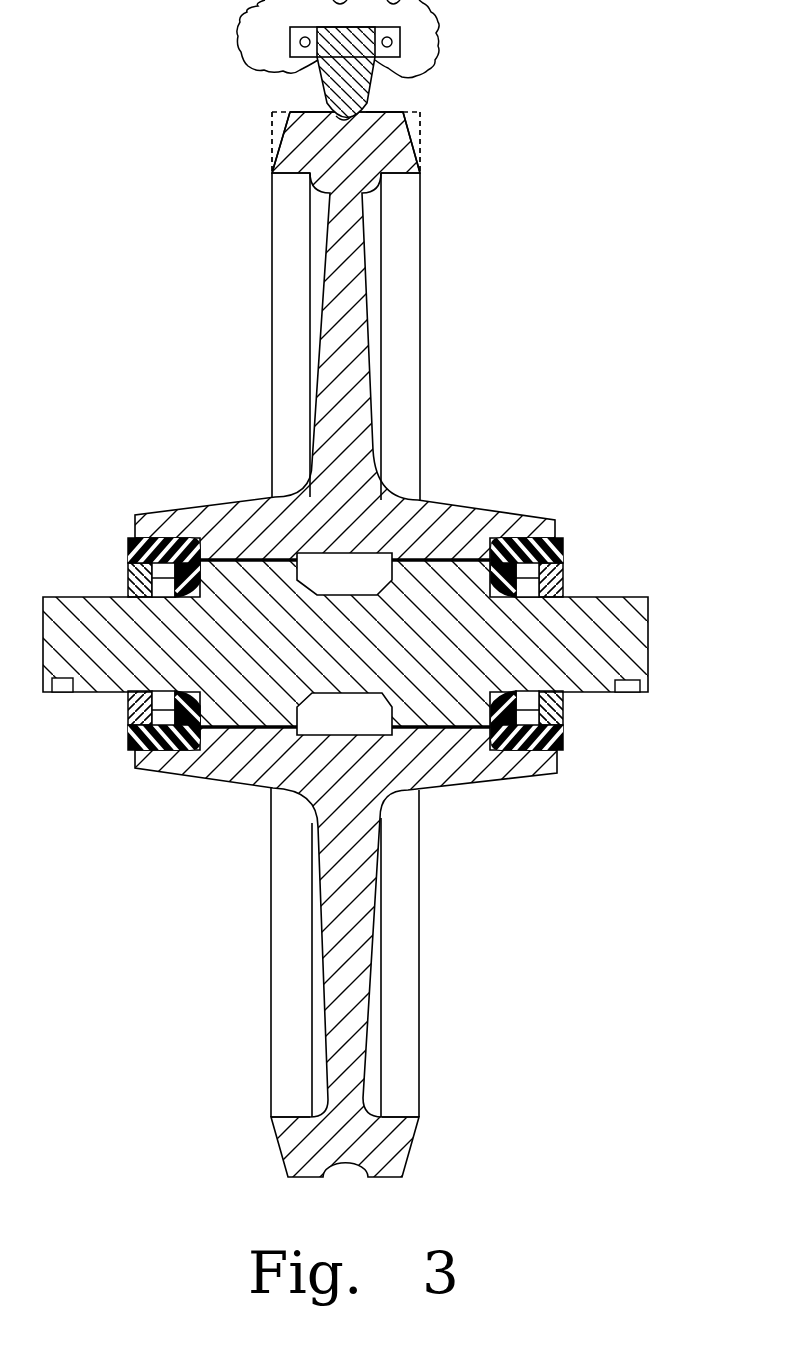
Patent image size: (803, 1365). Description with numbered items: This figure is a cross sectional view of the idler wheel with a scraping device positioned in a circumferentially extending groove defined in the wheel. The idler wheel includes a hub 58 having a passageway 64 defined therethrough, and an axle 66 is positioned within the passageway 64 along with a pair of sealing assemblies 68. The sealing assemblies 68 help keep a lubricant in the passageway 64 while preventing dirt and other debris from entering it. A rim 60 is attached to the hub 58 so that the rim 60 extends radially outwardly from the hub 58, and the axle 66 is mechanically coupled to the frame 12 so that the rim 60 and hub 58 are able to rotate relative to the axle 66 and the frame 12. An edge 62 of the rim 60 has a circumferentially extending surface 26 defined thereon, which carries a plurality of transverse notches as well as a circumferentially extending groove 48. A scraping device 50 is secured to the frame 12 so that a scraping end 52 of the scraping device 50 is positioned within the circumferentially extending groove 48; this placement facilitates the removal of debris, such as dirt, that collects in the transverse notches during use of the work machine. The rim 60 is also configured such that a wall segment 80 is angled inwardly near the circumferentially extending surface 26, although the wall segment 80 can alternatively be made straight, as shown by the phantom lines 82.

The frame 12 is at (253, 35).
The circumferentially extending surface 26 is at (300, 108).
The circumferentially extending groove 48 is at (355, 130).
The scraping device 50 is at (400, 45).
The scraping end 52 is at (363, 90).
The hub 58 is at (545, 482).
The rim 60 is at (352, 320).
The edge 62 is at (165, 153).
The passageway 64 is at (425, 558).
The axle 66 is at (615, 612).
The sealing assemblies 68 is at (106, 545).
The wall segment 80 is at (271, 250).
The phantom lines 82 is at (423, 137).